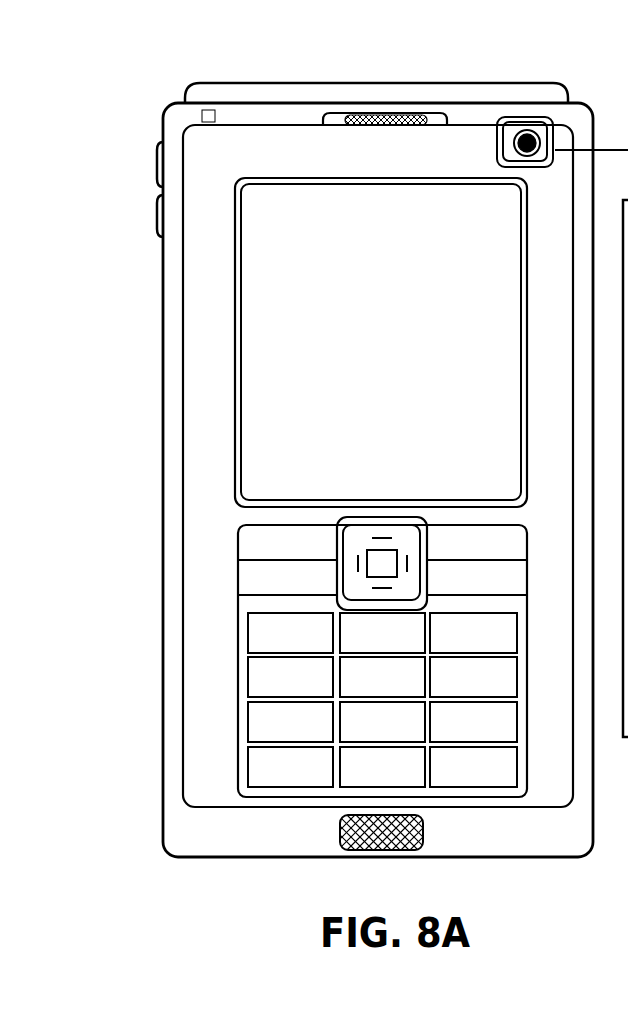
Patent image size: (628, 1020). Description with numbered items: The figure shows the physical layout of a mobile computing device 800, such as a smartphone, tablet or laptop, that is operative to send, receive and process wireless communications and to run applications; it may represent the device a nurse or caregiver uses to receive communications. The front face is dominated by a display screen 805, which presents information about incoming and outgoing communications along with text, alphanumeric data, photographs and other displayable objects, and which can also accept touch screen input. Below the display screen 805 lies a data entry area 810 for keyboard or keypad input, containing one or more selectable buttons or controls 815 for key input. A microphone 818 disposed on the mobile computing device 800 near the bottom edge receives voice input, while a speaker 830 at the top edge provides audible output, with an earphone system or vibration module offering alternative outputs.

The mobile computing device 800 is at (153, 107).
The display screen 805 is at (273, 323).
The data entry area 810 is at (238, 572).
The selectable buttons or controls 815 is at (262, 677).
The microphone 818 is at (338, 835).
The speaker 830 is at (427, 120).